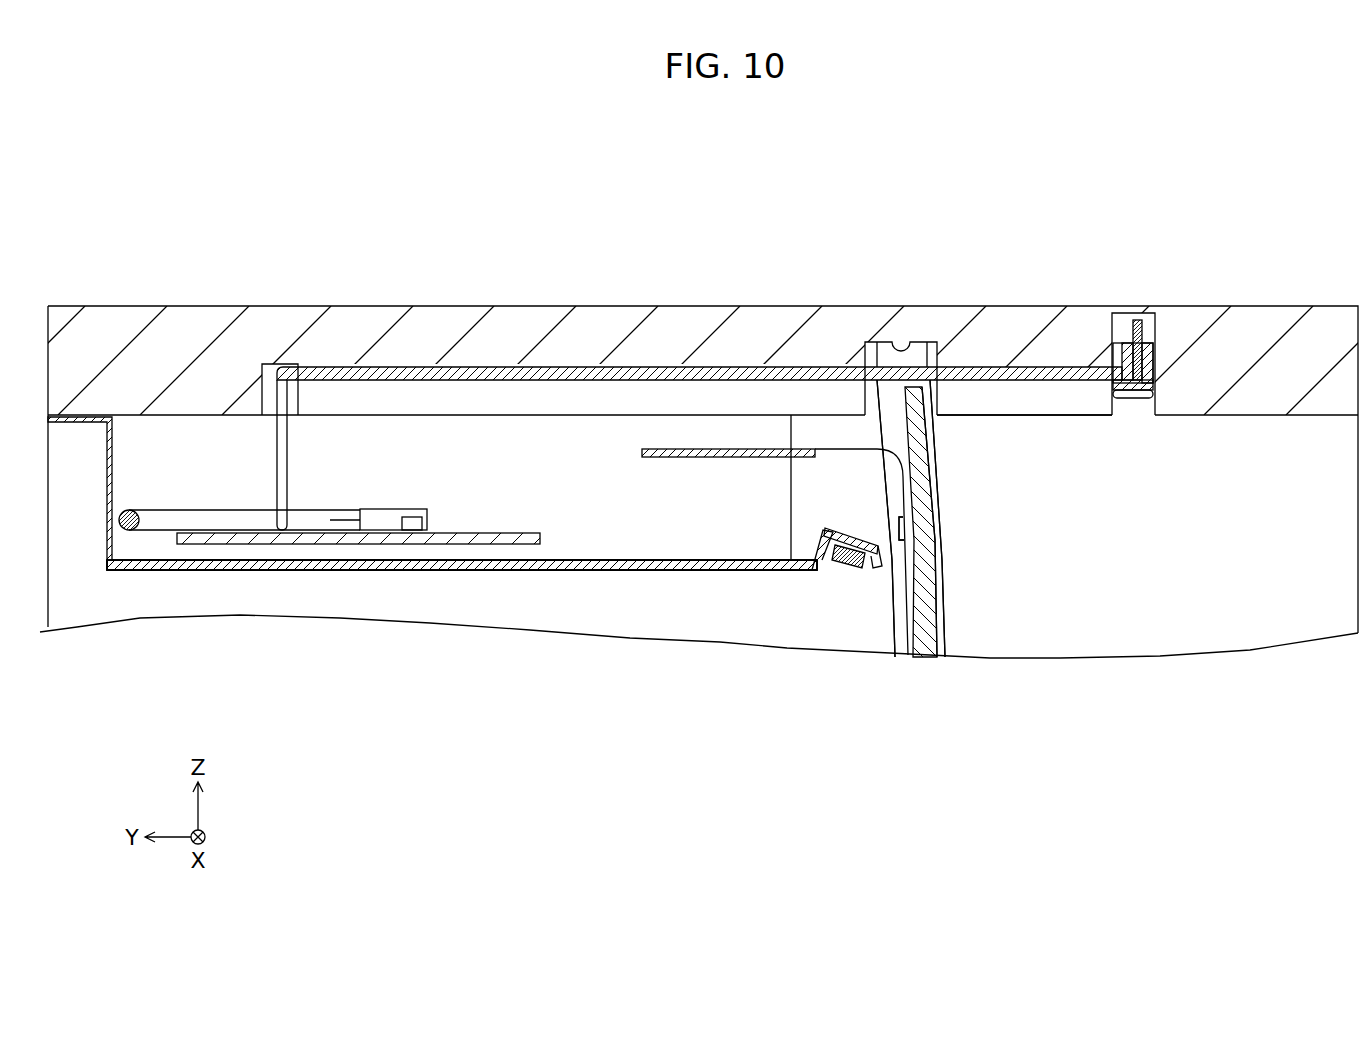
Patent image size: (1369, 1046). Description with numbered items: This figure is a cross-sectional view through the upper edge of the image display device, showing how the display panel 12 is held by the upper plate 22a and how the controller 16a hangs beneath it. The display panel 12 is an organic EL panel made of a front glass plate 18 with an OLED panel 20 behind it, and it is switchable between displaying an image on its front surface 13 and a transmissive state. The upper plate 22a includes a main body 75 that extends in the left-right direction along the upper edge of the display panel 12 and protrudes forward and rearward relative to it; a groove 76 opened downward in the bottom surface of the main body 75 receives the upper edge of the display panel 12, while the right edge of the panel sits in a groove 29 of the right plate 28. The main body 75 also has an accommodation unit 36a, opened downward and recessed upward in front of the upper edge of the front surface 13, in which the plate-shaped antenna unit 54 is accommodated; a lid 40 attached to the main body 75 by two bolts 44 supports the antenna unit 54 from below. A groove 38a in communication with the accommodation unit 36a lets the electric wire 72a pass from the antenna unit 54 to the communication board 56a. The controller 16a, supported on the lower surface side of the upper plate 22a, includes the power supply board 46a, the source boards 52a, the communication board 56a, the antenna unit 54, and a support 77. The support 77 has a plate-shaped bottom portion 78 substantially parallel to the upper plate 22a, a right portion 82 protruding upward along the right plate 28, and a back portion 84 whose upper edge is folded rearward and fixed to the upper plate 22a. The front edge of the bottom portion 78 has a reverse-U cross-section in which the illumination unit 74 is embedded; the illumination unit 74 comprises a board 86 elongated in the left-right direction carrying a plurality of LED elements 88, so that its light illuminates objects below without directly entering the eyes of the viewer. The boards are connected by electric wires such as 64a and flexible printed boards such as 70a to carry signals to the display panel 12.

The shaft 64a is at (213, 520).
The electric wire 72a is at (344, 367).
The communication board 56a is at (412, 517).
The right portion 82 is at (556, 465).
The upper plate 22a is at (627, 297).
The source board 52a is at (683, 449).
The bracket 70a is at (847, 449).
The groove 76 is at (907, 342).
The main body 75 is at (1005, 335).
The accommodation unit 36a is at (1118, 318).
The antenna unit 54 is at (1138, 320).
The bolt 44 is at (1123, 392).
The lid 40 is at (1140, 396).
The back portion 84 is at (104, 490).
The power supply board 46a is at (253, 538).
The bottom portion 78 is at (328, 570).
The support 77 is at (437, 581).
The controller 16a is at (532, 581).
The right plate 28 is at (665, 600).
The board 86 is at (823, 570).
The LED element 88 is at (850, 563).
The illumination unit 74 is at (788, 698).
The OLED panel 20 is at (895, 645).
The front glass plate 18 is at (948, 620).
The display panel 12 is at (902, 727).
The front surface 13 is at (937, 553).
The groove 29 is at (890, 585).
The groove 38a is at (1052, 397).